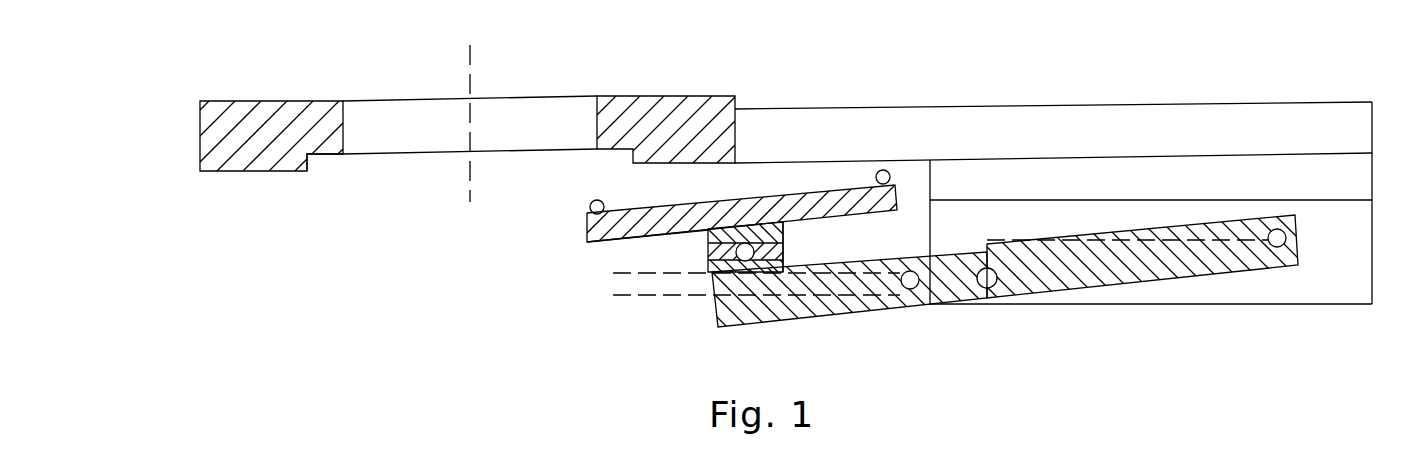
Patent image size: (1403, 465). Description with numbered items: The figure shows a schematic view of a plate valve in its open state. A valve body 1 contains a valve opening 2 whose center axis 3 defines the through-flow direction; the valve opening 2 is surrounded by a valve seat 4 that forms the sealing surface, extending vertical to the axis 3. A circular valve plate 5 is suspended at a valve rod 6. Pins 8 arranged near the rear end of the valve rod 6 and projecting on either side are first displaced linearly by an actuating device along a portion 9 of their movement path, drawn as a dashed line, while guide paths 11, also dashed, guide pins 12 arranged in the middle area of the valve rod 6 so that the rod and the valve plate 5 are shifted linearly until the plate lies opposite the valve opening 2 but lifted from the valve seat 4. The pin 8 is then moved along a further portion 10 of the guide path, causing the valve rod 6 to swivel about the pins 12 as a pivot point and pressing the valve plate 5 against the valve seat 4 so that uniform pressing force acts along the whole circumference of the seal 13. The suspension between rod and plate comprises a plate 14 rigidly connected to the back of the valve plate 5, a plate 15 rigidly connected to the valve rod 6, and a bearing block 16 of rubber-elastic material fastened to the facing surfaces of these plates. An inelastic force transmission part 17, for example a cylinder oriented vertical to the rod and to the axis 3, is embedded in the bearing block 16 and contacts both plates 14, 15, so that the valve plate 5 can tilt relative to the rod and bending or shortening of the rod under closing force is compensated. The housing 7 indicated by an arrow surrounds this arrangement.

The valve body 1 is at (242, 135).
The valve opening 2 is at (417, 133).
The center axis 3 is at (470, 62).
The valve seat 4 is at (320, 155).
The valve plate 5 is at (595, 238).
The valve rod 6 is at (763, 322).
The housing 7 is at (1117, 340).
The pins 8 is at (1277, 247).
The portion of the movement path 9 is at (1205, 242).
The portion of the guide path 10 is at (1000, 290).
The guide paths 11 is at (653, 283).
The pins 12 is at (910, 280).
The seal 13 is at (597, 200).
The plate 14 is at (755, 210).
The plate 15 is at (783, 252).
The bearing block 16 is at (745, 252).
The force transmission part 17 is at (713, 273).